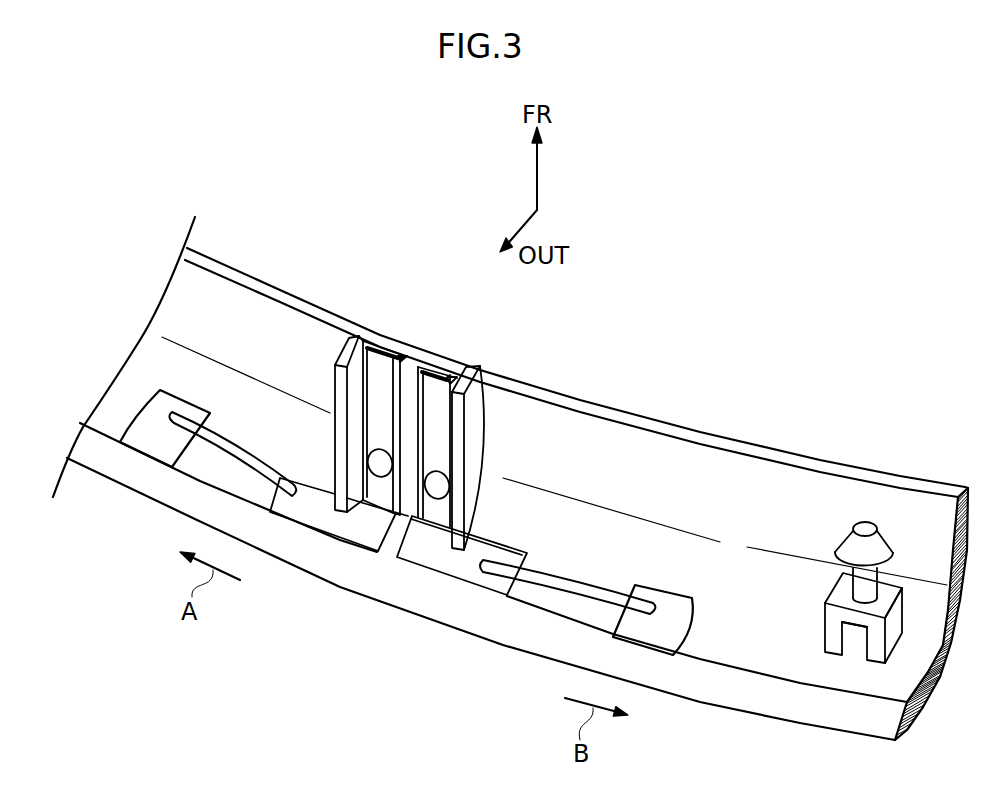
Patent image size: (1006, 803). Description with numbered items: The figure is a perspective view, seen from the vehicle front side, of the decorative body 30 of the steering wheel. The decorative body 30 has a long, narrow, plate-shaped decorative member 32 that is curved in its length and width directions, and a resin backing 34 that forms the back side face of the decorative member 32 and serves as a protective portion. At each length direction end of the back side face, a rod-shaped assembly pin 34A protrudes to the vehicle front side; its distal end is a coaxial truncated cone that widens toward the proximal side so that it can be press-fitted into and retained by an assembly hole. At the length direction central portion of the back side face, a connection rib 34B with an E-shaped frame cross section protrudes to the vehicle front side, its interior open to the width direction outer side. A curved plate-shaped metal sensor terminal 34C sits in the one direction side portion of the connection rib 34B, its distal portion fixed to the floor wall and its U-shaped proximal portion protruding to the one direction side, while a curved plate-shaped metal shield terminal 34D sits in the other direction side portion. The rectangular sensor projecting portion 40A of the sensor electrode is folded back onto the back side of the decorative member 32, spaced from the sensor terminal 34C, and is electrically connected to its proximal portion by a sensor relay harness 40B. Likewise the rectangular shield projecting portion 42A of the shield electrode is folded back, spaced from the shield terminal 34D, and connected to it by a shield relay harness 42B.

The decorative body 30 is at (296, 222).
The decorative member 32 is at (698, 430).
The backing 34 is at (590, 440).
The assembly pin 34A is at (843, 530).
The connection rib 34B is at (396, 423).
The sensor terminal 34C is at (380, 378).
The shield terminal 34D is at (437, 388).
The sensor projecting portion 40A is at (173, 394).
The sensor relay harness 40B is at (222, 456).
The shield projecting portion 42A is at (682, 622).
The shield relay harness 42B is at (557, 588).